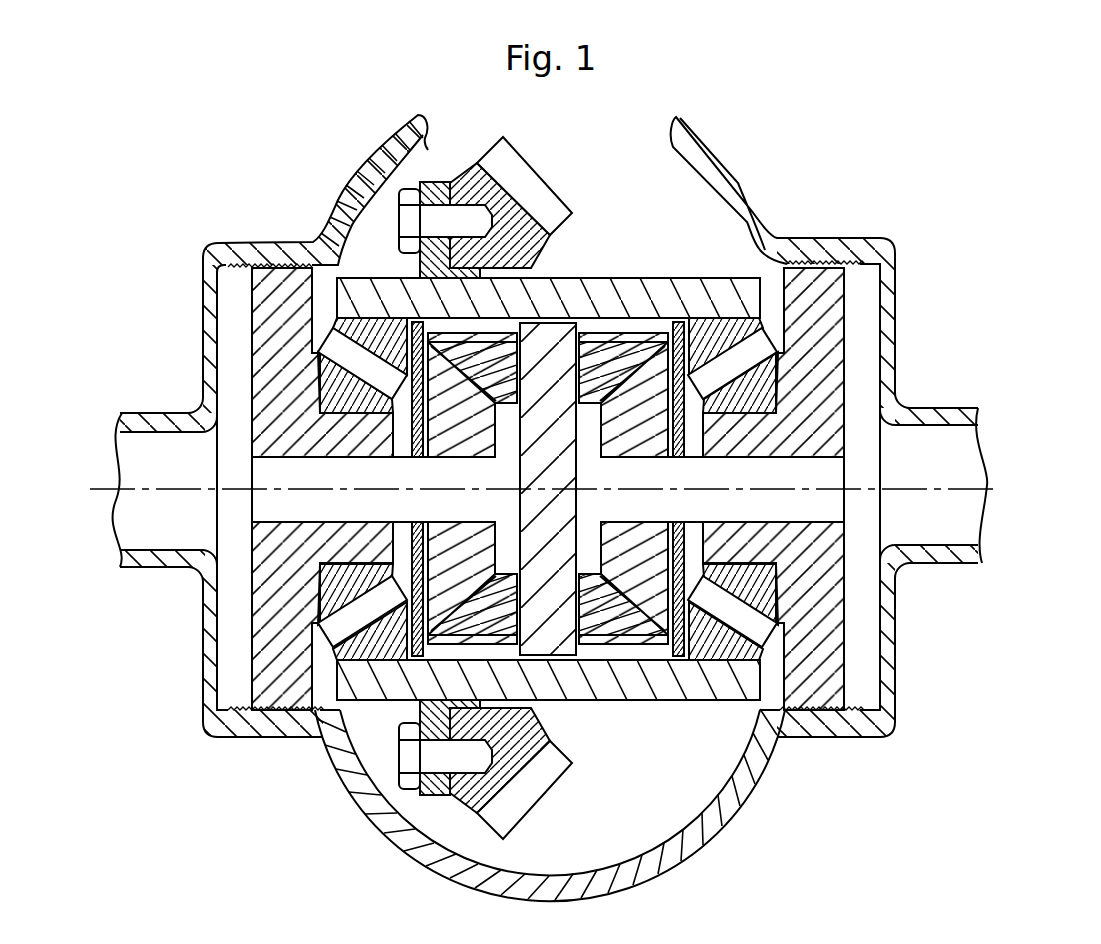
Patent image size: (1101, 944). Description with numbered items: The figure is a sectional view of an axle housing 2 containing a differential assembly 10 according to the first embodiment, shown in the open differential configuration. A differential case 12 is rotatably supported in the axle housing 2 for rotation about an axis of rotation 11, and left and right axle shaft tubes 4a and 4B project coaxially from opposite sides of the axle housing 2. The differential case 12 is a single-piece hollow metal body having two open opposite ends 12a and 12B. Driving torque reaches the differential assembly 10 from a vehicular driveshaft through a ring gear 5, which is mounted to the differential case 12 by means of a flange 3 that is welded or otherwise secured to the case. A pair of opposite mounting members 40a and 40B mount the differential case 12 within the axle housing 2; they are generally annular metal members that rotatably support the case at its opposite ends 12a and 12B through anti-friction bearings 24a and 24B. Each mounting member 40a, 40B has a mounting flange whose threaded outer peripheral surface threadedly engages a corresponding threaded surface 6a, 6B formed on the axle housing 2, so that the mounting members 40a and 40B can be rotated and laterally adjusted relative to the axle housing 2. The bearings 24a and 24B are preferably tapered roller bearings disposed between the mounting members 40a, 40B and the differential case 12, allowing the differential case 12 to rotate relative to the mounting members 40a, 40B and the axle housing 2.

The axle housing 2 is at (737, 183).
The flange 3 is at (440, 182).
The ring gear 5 is at (518, 178).
The differential assembly 10 is at (612, 255).
The axis of rotation 11 is at (993, 488).
The differential case 12 is at (610, 708).
The open end 12a is at (352, 688).
The open end 12B is at (712, 690).
The left axle shaft tube 4a is at (140, 563).
The right axle shaft tube 4B is at (943, 556).
The threaded surface 6a is at (228, 700).
The threaded surface 6B is at (861, 703).
The anti-friction bearing 24a is at (322, 652).
The anti-friction bearing 24B is at (776, 652).
The mounting member 40a is at (246, 362).
The mounting member 40B is at (853, 328).